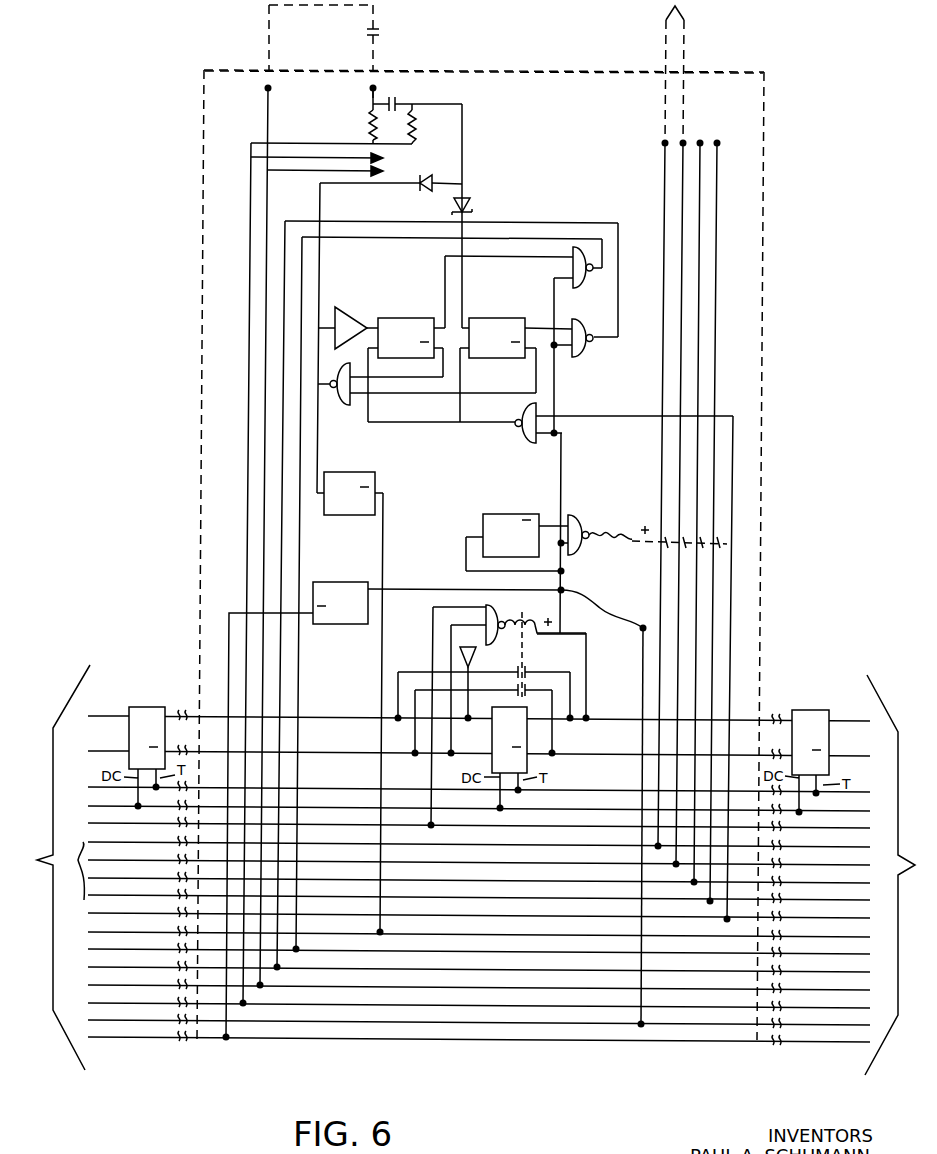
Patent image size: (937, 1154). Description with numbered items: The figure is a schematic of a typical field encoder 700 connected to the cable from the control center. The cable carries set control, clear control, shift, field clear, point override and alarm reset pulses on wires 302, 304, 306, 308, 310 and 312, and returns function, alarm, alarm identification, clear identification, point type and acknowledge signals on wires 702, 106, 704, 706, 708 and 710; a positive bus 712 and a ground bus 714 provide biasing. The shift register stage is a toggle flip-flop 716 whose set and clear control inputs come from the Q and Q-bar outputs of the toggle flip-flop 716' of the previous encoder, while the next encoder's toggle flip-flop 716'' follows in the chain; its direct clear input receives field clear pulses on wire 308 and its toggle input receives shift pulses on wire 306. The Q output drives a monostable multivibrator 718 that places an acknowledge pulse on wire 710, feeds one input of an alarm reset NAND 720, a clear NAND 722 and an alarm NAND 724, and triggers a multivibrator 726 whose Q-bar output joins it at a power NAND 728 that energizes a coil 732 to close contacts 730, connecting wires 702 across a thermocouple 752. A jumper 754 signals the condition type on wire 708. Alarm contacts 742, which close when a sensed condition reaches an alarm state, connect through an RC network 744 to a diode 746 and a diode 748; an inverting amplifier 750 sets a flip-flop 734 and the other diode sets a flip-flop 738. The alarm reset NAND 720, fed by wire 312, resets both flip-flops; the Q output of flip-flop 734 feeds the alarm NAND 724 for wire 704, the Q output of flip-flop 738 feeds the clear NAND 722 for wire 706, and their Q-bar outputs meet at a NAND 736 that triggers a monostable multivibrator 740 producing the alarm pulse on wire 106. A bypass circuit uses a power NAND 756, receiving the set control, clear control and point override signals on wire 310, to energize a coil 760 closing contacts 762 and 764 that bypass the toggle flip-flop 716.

The field encoder 700 is at (770, 122).
The wires 702 is at (460, 871).
The positive bus 712 is at (378, 174).
The ground bus 714 is at (375, 152).
The toggle flip-flop 716 is at (546, 745).
The toggle flip-flop 716' is at (153, 713).
The toggle flip-flop 716'' is at (828, 722).
The monostable multivibrator 718 is at (318, 581).
The alarm reset NAND 720 is at (526, 440).
The clear NAND 722 is at (590, 352).
The alarm NAND 724 is at (565, 268).
The multivibrator 726 is at (488, 514).
The power NAND 728 is at (577, 515).
The contacts 730 is at (727, 545).
The coil 732 is at (604, 530).
The flip-flop 734 is at (395, 317).
The NAND 736 is at (345, 407).
The flip-flop 738 is at (492, 317).
The monostable multivibrator 740 is at (362, 471).
The alarm contacts 742 is at (378, 28).
The RC network 744 is at (412, 102).
The diode 746 is at (432, 181).
The diode 748 is at (472, 206).
The inverting amplifier 750 is at (357, 302).
The thermocouple 752 is at (685, 13).
The jumper 754 is at (590, 590).
The power NAND 756 is at (497, 606).
The coil 760 is at (588, 638).
The contacts 762 is at (525, 670).
The contacts 764 is at (527, 688).
The wire 302 is at (88, 715).
The wire 304 is at (90, 751).
The wire 306 is at (466, 778).
The wire 308 is at (92, 797).
The wire 310 is at (95, 814).
The wire 312 is at (108, 903).
The wire 106 is at (105, 932).
The wire 704 is at (105, 949).
The wire 706 is at (104, 967).
The wire 708 is at (105, 1020).
The wire 710 is at (105, 1037).